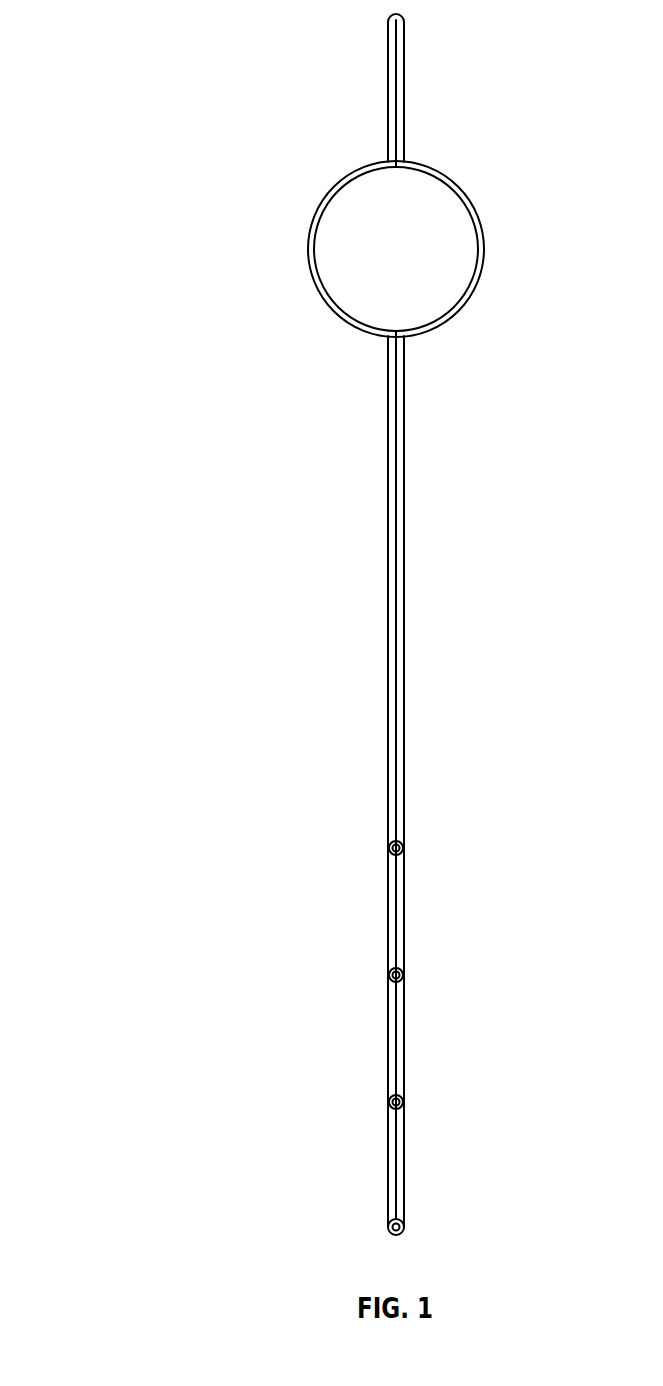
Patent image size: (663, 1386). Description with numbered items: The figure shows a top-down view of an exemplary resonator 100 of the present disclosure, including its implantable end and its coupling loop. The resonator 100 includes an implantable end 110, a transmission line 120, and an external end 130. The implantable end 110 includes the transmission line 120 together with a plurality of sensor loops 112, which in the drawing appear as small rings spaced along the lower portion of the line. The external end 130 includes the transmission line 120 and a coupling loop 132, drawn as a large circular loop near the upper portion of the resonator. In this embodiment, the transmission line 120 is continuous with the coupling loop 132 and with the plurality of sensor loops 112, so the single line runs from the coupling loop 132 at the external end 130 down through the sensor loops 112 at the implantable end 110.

The resonator 100 is at (133, 87).
The implantable end 110 is at (282, 482).
The sensor loops 112 is at (403, 848).
The transmission line 120 is at (398, 542).
The external end 130 is at (282, 458).
The coupling loop 132 is at (466, 192).